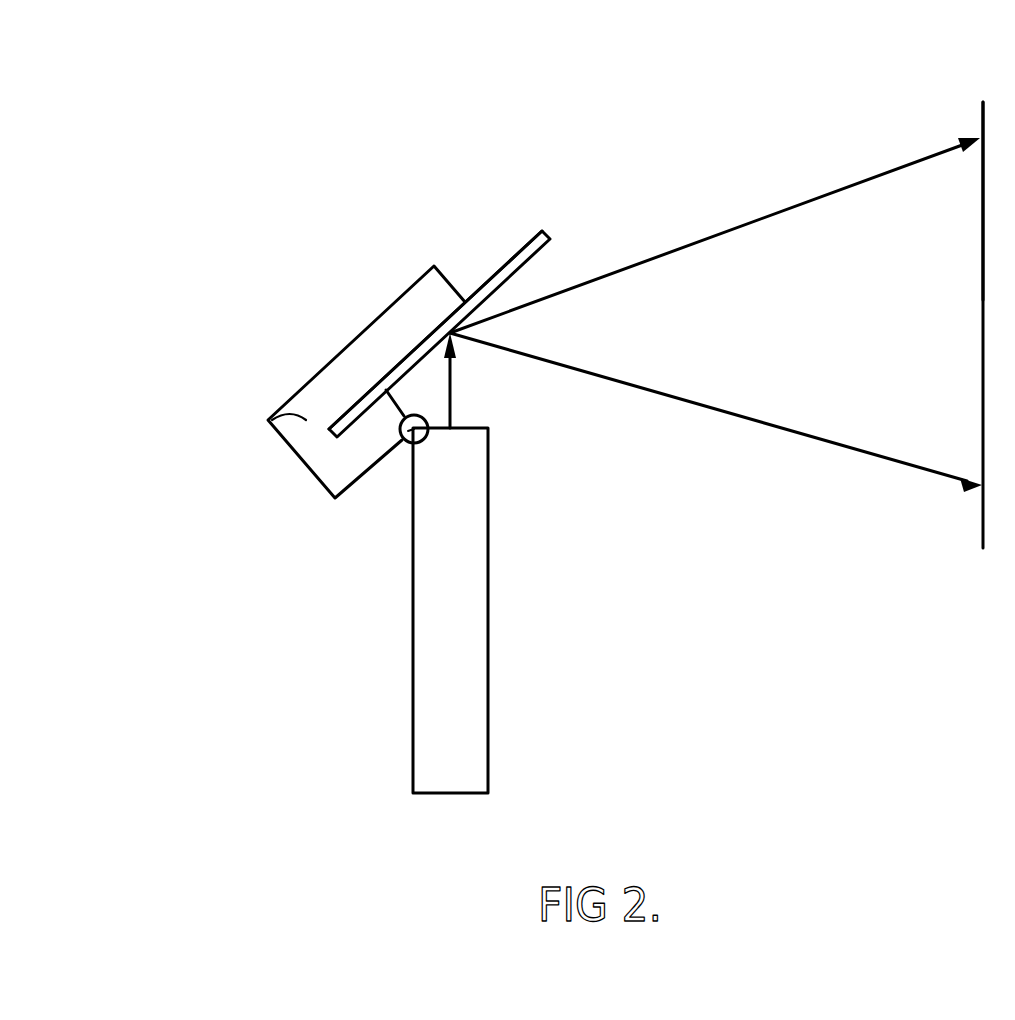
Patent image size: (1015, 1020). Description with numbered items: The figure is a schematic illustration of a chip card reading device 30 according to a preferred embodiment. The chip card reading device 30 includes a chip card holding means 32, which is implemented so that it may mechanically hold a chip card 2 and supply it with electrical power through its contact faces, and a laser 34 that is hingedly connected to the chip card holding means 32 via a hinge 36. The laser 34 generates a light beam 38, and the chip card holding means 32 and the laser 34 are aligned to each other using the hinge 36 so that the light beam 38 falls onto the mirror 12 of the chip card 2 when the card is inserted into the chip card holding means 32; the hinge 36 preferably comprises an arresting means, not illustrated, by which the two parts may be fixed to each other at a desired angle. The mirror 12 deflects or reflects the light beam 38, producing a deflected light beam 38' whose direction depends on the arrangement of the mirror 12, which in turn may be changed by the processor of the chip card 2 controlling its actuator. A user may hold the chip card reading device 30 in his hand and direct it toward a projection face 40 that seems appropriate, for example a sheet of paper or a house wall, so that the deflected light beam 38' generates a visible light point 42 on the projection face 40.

The chip card 2 is at (510, 267).
The mirror 12 is at (440, 328).
The chip card reading device 30 is at (236, 277).
The chip card holding means 32 is at (270, 420).
The laser 34 is at (447, 563).
The hinge 36 is at (378, 463).
The light beam 38 is at (536, 405).
The deflected light beam 38' is at (716, 300).
The projection face 40 is at (982, 510).
The visible light point 42 is at (980, 137).